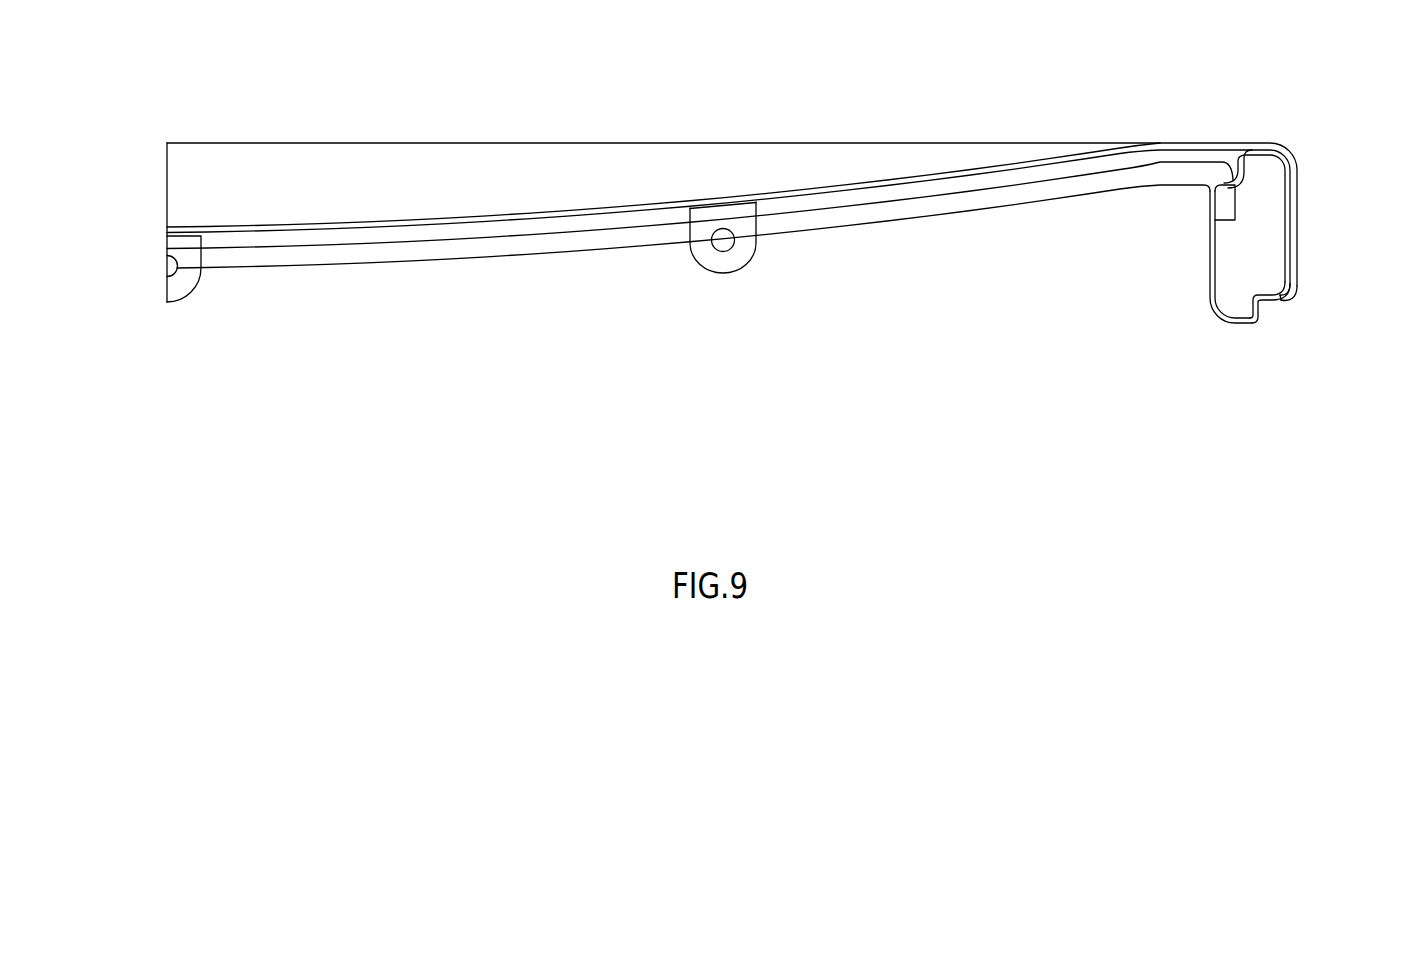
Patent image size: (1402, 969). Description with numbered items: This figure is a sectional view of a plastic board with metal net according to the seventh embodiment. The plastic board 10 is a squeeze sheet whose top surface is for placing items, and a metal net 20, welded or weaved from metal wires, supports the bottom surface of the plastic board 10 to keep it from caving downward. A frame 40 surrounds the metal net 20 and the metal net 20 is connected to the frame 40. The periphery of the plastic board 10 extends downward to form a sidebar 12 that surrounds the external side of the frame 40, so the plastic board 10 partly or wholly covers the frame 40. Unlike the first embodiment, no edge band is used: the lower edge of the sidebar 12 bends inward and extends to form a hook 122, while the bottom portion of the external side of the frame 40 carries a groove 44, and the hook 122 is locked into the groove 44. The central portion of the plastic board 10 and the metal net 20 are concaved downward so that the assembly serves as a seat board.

The plastic board 10 is at (670, 173).
The sidebar 12 is at (1292, 210).
The hook 122 is at (1283, 297).
The metal net 20 is at (968, 200).
The frame 40 is at (1242, 265).
The groove 44 is at (1270, 303).